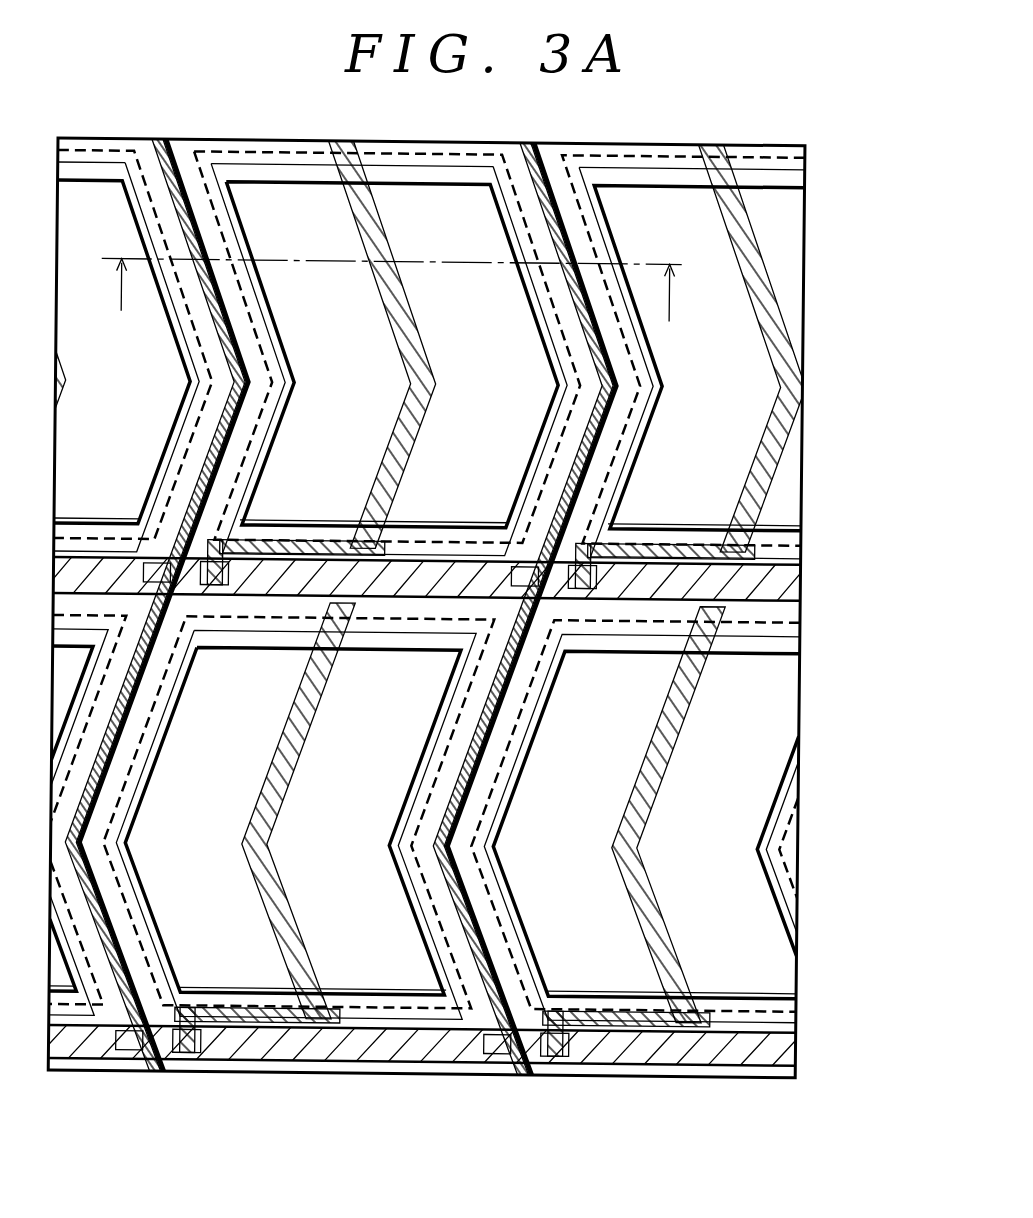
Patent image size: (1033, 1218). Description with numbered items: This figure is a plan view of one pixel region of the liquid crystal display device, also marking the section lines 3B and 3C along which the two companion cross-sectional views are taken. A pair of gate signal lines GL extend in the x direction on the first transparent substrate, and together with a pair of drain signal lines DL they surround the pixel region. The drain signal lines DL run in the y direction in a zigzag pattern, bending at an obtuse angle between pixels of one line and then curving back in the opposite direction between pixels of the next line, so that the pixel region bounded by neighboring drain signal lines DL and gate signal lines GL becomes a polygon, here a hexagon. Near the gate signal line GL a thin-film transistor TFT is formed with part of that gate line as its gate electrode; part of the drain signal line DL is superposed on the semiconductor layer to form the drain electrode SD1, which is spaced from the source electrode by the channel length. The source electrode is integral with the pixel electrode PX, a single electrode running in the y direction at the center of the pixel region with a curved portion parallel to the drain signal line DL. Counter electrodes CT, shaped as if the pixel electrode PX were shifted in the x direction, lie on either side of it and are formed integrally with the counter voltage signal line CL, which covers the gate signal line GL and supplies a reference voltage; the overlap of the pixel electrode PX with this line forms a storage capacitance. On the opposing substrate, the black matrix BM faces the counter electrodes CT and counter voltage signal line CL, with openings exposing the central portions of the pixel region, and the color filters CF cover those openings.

The counter voltage signal line CL is at (808, 160).
The counter electrode CT is at (655, 352).
The pixel electrode PX is at (790, 420).
The black matrix BM is at (803, 542).
The color filter CF is at (803, 554).
The gate signal line GL is at (800, 586).
The drain signal line DL is at (523, 1082).
The drain electrode SD1 is at (497, 1062).
The thin-film transistor TFT is at (555, 1062).
The line 3B— 3B is at (393, 467).
The line 3C— 3C is at (399, 294).